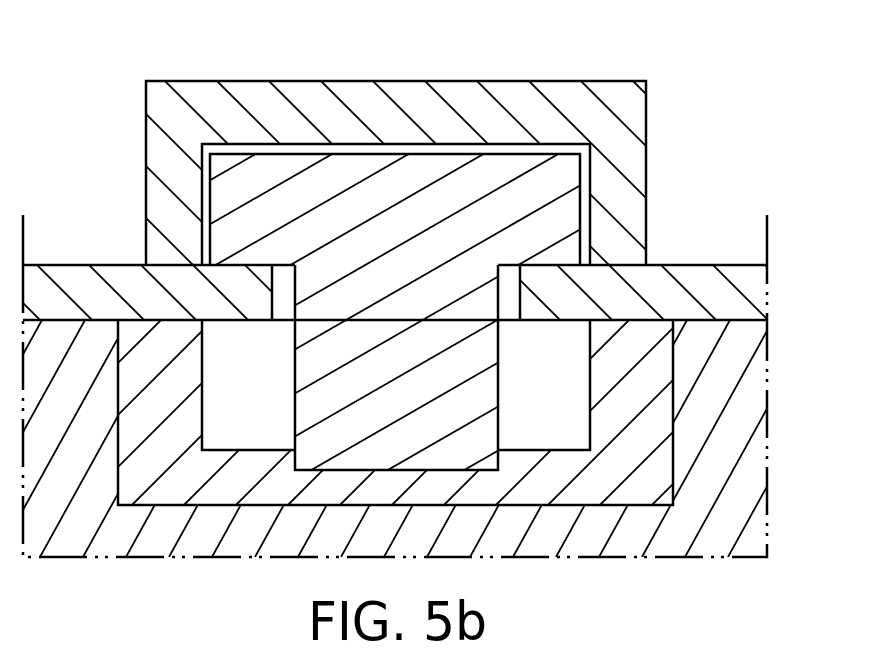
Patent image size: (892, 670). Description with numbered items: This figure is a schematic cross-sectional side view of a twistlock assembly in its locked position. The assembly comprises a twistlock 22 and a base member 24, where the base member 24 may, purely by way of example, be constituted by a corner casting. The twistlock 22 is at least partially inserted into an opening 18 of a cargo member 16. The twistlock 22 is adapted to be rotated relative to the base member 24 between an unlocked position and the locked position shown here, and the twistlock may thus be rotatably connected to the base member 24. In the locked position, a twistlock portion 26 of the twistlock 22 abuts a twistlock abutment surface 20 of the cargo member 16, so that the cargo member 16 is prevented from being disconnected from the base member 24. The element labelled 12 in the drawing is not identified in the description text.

The base body 12 is at (715, 522).
The cargo member 16 is at (130, 288).
The opening 18 is at (277, 330).
The twistlock abutment surface 20 is at (206, 262).
The twistlock 22 is at (512, 360).
The base member 24 is at (557, 470).
The twistlock portion 26 is at (397, 187).